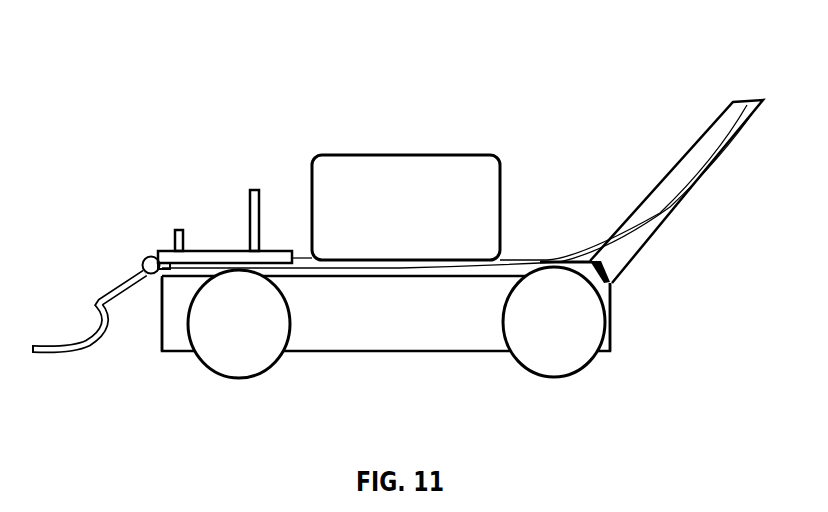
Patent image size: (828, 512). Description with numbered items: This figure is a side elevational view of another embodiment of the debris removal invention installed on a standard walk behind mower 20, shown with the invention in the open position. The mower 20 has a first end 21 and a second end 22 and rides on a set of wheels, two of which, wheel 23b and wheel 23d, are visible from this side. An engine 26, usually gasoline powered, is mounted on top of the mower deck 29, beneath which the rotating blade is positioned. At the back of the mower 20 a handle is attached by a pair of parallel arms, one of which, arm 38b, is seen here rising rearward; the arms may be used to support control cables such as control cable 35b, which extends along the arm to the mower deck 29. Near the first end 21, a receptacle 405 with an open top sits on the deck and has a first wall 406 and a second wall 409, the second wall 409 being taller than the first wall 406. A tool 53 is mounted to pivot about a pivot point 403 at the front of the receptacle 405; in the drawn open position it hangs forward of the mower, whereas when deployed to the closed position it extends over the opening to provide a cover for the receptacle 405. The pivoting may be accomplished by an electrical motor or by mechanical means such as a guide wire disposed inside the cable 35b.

The walk behind mower 20 is at (487, 107).
The first end 21 is at (158, 357).
The second end 22 is at (613, 355).
The wheel 23b is at (240, 353).
The wheel 23d is at (565, 337).
The engine 26 is at (391, 219).
The mower deck 29 is at (407, 320).
The control cable 35b is at (575, 255).
The arm 38b is at (710, 140).
The tool 53 is at (93, 343).
The pivot point 403 is at (143, 257).
The receptacle 405 is at (213, 205).
The first wall 406 is at (180, 230).
The second wall 409 is at (255, 190).